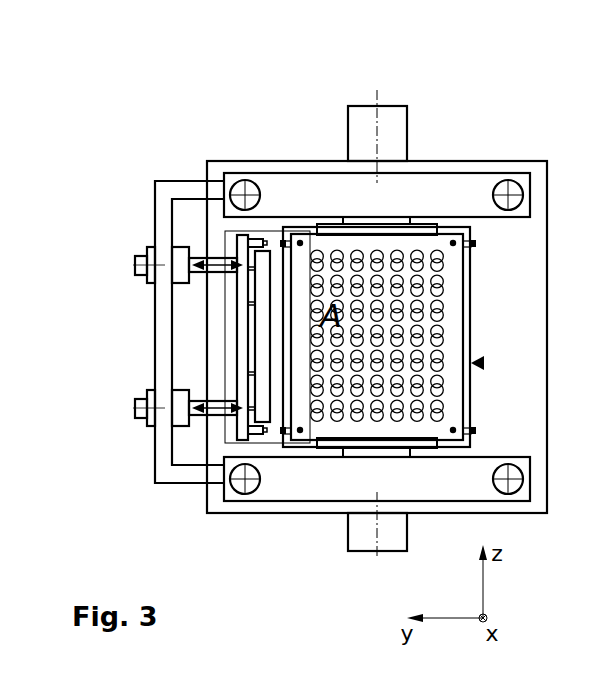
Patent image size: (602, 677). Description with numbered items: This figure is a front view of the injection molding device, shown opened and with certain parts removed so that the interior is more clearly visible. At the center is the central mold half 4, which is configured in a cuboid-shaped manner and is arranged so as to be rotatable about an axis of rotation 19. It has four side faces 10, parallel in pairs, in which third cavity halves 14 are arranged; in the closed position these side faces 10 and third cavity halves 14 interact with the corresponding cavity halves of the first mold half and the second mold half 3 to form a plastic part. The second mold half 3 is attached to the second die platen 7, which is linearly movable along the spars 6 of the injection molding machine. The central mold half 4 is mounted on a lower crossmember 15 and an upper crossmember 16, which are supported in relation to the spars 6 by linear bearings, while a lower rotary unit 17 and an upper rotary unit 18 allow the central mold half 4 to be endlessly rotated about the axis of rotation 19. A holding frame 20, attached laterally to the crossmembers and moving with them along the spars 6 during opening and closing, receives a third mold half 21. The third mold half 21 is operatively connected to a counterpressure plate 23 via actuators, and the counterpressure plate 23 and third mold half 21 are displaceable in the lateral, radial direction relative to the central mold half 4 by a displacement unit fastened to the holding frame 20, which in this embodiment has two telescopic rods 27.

The second mold half 3 is at (429, 337).
The central mold half 4 is at (524, 375).
The spars 6 is at (355, 320).
The second die platen 7 is at (392, 337).
The side faces 10 is at (438, 337).
The third cavity halves 14 is at (443, 282).
The lower crossmember 15 is at (367, 516).
The upper crossmember 16 is at (353, 141).
The lower rotary unit 17 is at (343, 544).
The upper rotary unit 18 is at (343, 113).
The axis of rotation 19 is at (418, 312).
The holding frame 20 is at (162, 274).
The third mold half 21 is at (184, 336).
The counterpressure plate 23 is at (183, 337).
The telescopic rods 27 is at (171, 212).